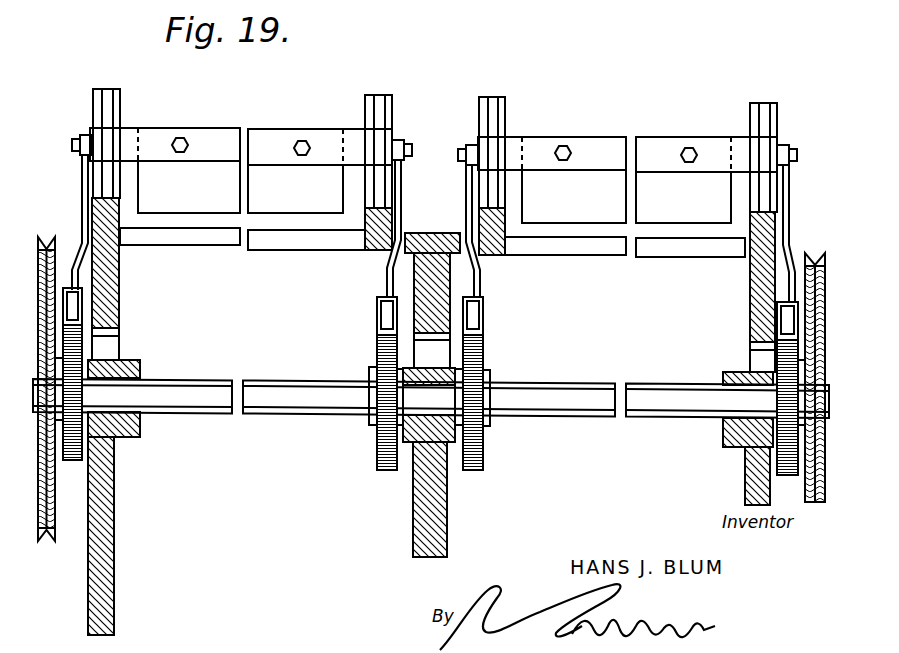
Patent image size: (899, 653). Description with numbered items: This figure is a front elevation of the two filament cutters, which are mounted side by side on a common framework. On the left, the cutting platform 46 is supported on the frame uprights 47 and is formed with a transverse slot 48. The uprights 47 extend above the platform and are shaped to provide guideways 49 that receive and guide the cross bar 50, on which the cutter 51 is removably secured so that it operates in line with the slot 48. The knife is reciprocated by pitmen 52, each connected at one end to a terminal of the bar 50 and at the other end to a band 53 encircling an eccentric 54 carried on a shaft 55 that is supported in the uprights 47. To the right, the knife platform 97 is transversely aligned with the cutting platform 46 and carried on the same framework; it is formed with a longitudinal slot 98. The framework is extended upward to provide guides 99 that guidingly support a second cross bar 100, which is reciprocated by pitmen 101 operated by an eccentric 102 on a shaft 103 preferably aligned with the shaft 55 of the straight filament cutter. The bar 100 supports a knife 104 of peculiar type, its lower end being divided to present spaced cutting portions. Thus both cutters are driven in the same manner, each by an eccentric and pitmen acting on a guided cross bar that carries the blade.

The cutting platform 46 is at (120, 248).
The frame uprights 47 is at (119, 318).
The transverse slot 48 is at (295, 247).
The guideways 49 is at (121, 105).
The cross bar 50 is at (133, 134).
The cutter 51 is at (197, 168).
The pitmen 52 is at (81, 204).
The band 53 is at (73, 345).
The eccentric 54 is at (82, 462).
The shaft 55 is at (208, 383).
The knife platform 97 is at (497, 254).
The longitudinal slot 98 is at (610, 256).
The guides 99 is at (495, 115).
The cross bar 100 is at (518, 142).
The pitmen 101 is at (477, 298).
The eccentric 102 is at (477, 355).
The shaft 103 is at (567, 386).
The knife 104 is at (585, 185).